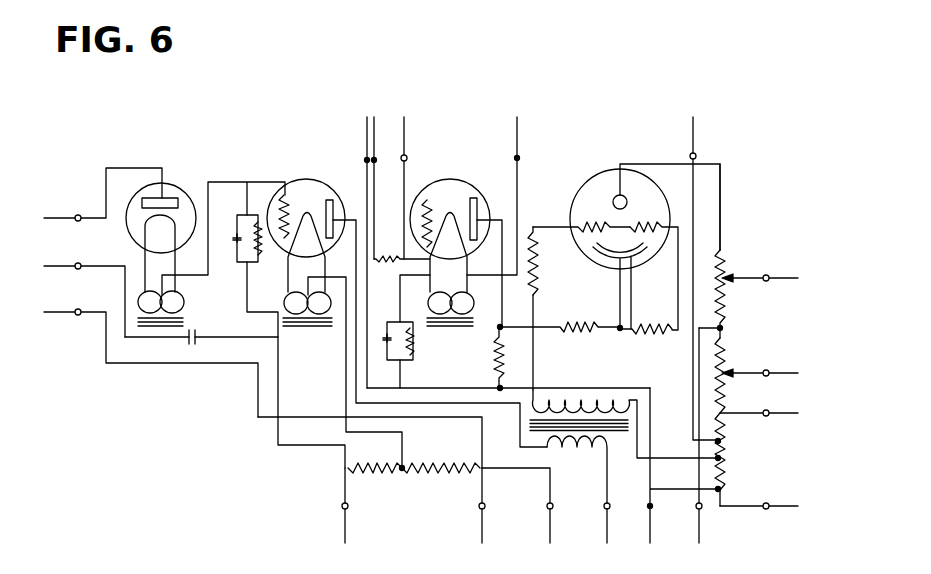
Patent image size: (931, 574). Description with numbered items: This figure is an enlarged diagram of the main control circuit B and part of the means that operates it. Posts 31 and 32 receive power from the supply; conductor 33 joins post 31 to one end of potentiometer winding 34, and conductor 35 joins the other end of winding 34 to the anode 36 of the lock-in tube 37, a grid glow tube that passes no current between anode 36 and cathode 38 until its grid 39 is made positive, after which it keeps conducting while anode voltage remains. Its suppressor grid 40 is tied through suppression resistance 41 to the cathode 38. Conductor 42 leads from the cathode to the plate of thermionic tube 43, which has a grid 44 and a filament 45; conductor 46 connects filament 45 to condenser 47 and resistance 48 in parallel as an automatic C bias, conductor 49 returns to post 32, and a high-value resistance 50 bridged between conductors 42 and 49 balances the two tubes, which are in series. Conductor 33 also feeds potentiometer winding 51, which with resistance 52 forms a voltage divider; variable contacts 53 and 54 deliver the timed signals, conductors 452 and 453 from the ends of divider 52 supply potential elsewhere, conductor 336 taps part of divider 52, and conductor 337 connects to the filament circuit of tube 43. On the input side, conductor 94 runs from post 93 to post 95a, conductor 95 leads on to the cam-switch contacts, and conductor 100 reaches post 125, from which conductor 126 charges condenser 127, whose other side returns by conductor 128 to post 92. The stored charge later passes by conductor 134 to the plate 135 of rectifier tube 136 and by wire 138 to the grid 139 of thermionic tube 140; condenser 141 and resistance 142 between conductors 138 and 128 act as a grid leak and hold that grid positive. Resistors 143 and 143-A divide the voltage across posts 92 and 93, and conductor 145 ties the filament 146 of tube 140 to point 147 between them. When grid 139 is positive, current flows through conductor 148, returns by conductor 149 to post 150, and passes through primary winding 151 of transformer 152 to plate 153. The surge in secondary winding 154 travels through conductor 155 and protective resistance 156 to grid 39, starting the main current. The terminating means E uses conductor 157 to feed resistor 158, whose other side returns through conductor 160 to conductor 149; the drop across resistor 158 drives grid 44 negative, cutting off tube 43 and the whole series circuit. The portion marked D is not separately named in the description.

The amplifier tube unit D is at (263, 160).
The means for terminating current flow E is at (445, 143).
The main control circuit B is at (608, 148).
The conductor 134 is at (55, 216).
The conductor 100 is at (55, 265).
The post 125 is at (77, 269).
The conductor 95 is at (56, 313).
The post 95a is at (80, 318).
The lock-in tube 37 is at (152, 223).
The rectifier tube 136 is at (192, 195).
The plate 135 is at (171, 186).
The wire 138 is at (198, 282).
The grid 139 is at (254, 225).
The condenser 141 is at (234, 241).
The resistance 142 is at (262, 252).
The conductor 126 is at (144, 337).
The condenser 127 is at (200, 325).
The conductor 128 is at (237, 327).
The thermionic tube 140 is at (305, 180).
The filament 146 is at (291, 257).
The plate 153 is at (330, 199).
The conductor 145 is at (343, 364).
The conductor 94 is at (257, 399).
The conductor 157 is at (376, 130).
The conductor 160 is at (408, 128).
The resistor 158 is at (395, 258).
The thermionic tube 43 is at (447, 179).
The grid 44 is at (438, 202).
The filament 45 is at (457, 216).
The conductor 337 is at (519, 133).
The conductor 46 is at (400, 297).
The condenser 47 is at (387, 341).
The resistance 48 is at (414, 340).
The conductor 49 is at (431, 388).
The resistance 50 is at (497, 356).
The anode 36 is at (628, 197).
The grid 39 is at (593, 225).
The suppressor grid 40 is at (648, 217).
The cathode 38 is at (628, 262).
The suppression resistance 41 is at (632, 334).
The conductor 42 is at (577, 328).
The resistance 156 is at (538, 285).
The conductor 155 is at (536, 365).
The secondary winding 154 is at (582, 404).
The transformer 152 is at (631, 423).
The primary winding 151 is at (563, 451).
The post 150 is at (603, 507).
The conductor 149 is at (606, 534).
The conductor 148 is at (547, 540).
The post 92 is at (342, 507).
The post 93 is at (480, 507).
The resistor 143-A is at (373, 470).
The resistor 143 is at (438, 467).
The point 147 is at (403, 467).
The conductor 336 is at (696, 133).
The conductor 35 is at (722, 203).
The potentiometer winding 34 is at (729, 297).
The variable contact 53 is at (747, 277).
The conductor 33 is at (718, 328).
The post 31 is at (697, 508).
The potentiometer winding 51 is at (728, 366).
The variable contact 54 is at (743, 375).
The conductor 452 is at (793, 415).
The resistance 52 is at (728, 448).
The post 32 is at (650, 508).
The conductor 453 is at (790, 506).